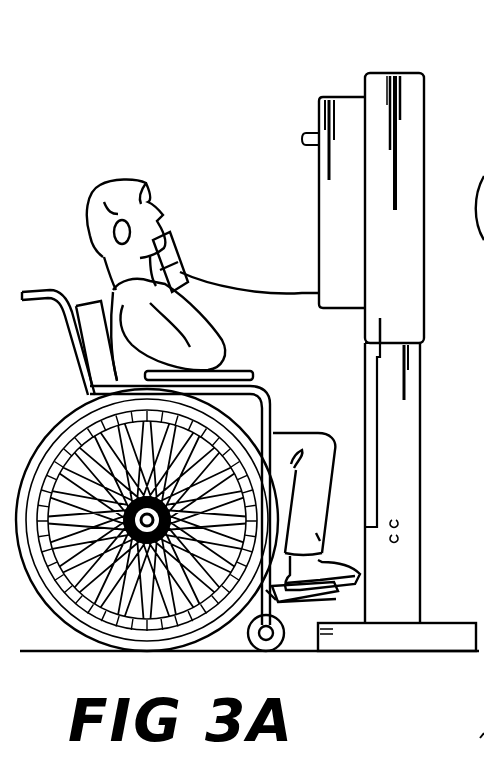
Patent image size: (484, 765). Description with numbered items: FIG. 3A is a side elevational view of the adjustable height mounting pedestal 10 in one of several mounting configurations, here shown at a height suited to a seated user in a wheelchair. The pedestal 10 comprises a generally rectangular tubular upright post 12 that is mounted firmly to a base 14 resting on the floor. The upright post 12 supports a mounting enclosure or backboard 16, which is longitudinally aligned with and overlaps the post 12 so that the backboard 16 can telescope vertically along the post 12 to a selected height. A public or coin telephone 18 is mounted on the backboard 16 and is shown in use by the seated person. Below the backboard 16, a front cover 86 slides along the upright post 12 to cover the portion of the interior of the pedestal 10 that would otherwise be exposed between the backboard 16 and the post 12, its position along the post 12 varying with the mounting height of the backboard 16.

The adjustable height mounting pedestal 10 is at (440, 488).
The upright post 12 is at (414, 415).
The base 14 is at (442, 627).
The mounting enclosure (backboard) 16 is at (416, 98).
The public or coin telephone 18 is at (346, 97).
The front cover 86 is at (368, 393).